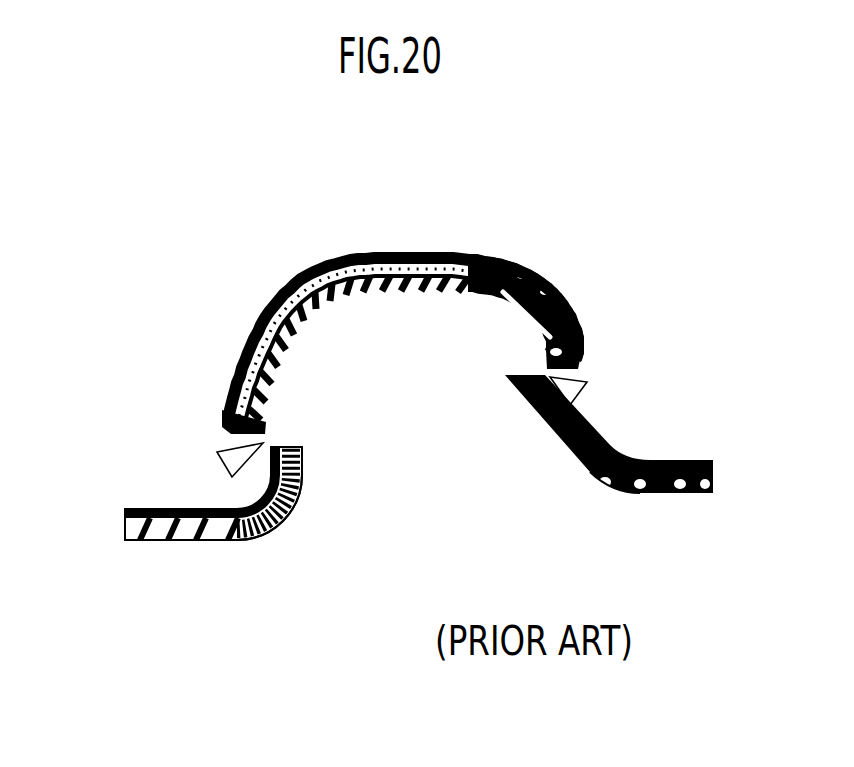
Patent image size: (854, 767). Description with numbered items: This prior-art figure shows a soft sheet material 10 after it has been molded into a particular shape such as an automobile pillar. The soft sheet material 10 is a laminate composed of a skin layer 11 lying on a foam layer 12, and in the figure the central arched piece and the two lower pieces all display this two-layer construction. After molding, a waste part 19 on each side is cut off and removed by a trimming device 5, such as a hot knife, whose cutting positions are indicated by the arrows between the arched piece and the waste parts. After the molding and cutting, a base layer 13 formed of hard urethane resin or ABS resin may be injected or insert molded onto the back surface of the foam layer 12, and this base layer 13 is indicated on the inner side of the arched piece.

The soft sheet material 10 is at (266, 268).
The skin layer 11 is at (484, 258).
The foam layer 12 is at (390, 253).
The base layer 13 is at (423, 285).
The trimming device 5 is at (228, 460).
The waste part 19 is at (298, 520).